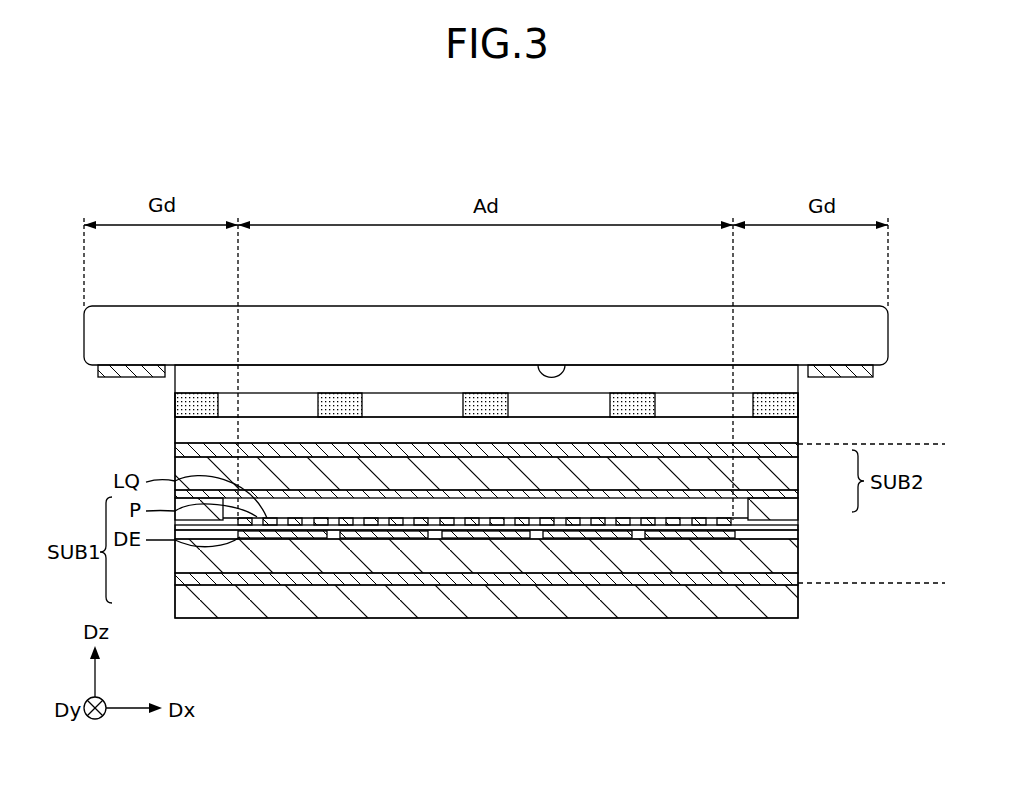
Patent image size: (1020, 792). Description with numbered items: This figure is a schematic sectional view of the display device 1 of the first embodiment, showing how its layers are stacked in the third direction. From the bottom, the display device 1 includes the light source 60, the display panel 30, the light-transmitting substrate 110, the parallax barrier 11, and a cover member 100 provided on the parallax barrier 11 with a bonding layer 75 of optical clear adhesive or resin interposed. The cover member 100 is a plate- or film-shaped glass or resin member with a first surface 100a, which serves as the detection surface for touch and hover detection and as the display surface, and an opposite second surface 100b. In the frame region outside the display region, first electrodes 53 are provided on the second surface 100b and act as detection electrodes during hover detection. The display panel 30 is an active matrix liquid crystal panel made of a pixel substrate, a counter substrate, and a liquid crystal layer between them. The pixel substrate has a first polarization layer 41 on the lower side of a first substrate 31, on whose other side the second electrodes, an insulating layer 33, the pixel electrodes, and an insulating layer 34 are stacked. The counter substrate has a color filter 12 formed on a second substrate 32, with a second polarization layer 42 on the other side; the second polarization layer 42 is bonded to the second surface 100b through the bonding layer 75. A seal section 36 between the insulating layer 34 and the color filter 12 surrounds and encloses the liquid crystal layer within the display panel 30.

The display device 1 is at (738, 158).
The cover member 100 is at (890, 333).
The first surface 100a is at (648, 306).
The second surface 100b is at (558, 365).
The bonding layer 75 is at (485, 378).
The first electrodes 53 is at (98, 372).
The parallax barrier 11 is at (798, 402).
The light-transmitting substrate 110 is at (793, 430).
The second polarization layer 42 is at (175, 448).
The second substrate 32 is at (798, 473).
The color filter 12 is at (798, 495).
The insulating layer 34 is at (335, 518).
The seal section 36 is at (798, 518).
The insulating layer 33 is at (798, 537).
The first substrate 31 is at (175, 560).
The first polarization layer 41 is at (175, 580).
The light source 60 is at (798, 598).
The display panel 30 is at (933, 444).